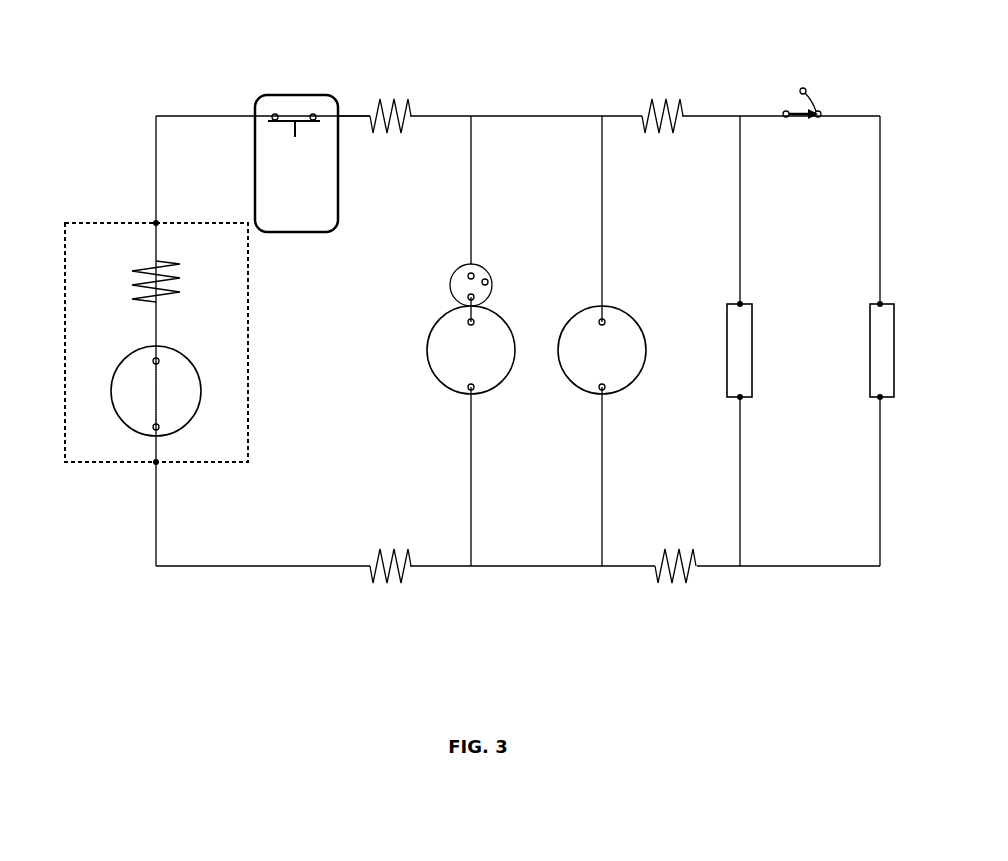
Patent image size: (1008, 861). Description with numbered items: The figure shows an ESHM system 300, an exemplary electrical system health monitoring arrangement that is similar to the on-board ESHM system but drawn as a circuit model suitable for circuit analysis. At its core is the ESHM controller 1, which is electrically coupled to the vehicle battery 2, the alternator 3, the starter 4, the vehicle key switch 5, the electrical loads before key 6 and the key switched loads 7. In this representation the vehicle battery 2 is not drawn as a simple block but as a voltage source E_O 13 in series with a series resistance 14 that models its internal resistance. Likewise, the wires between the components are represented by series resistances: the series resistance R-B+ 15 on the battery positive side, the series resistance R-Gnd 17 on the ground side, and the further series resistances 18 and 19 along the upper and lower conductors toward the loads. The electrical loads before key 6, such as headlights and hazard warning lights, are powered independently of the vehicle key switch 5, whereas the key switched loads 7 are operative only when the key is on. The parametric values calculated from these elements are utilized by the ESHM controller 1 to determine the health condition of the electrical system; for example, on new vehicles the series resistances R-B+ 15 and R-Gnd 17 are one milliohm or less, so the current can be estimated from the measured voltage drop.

The ESHM system 300 is at (205, 33).
The ESHM controller 1 is at (248, 163).
The vehicle battery 2 is at (97, 218).
The alternator 3 is at (590, 405).
The starter 4 is at (450, 405).
The vehicle key switch 5 is at (820, 98).
The electrical loads before key 6 is at (728, 405).
The key switched loads 7 is at (870, 405).
The voltage source E_O 13 is at (117, 362).
The series resistance 14 is at (125, 257).
The series resistance R-B+ 15 is at (378, 82).
The series resistance R-Gnd 17 is at (388, 535).
The series resistance 18 is at (647, 82).
The series resistance 19 is at (674, 535).